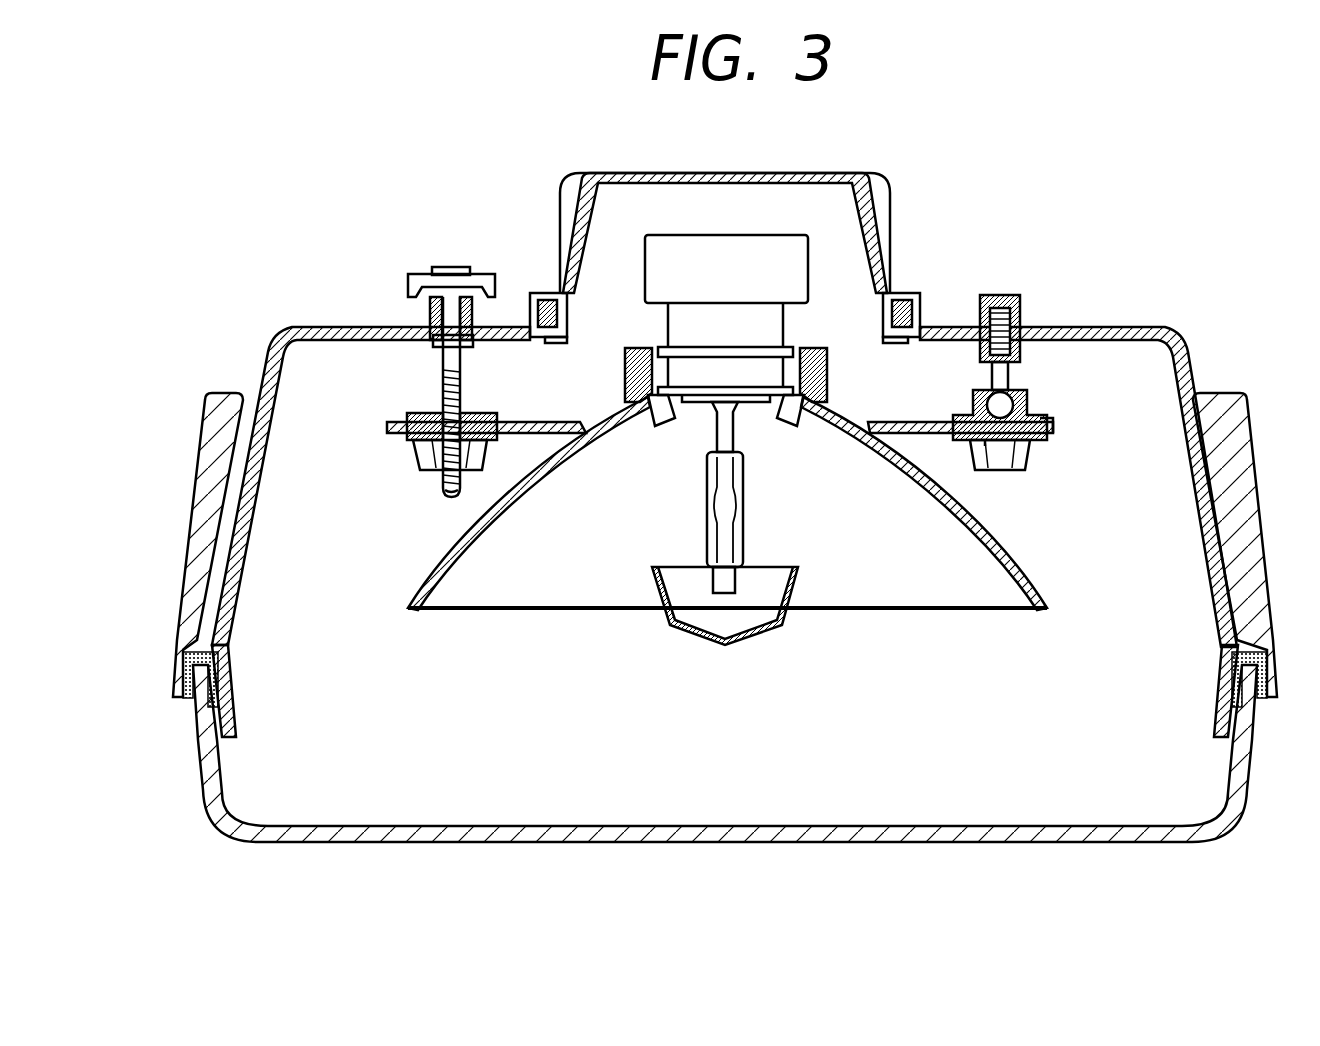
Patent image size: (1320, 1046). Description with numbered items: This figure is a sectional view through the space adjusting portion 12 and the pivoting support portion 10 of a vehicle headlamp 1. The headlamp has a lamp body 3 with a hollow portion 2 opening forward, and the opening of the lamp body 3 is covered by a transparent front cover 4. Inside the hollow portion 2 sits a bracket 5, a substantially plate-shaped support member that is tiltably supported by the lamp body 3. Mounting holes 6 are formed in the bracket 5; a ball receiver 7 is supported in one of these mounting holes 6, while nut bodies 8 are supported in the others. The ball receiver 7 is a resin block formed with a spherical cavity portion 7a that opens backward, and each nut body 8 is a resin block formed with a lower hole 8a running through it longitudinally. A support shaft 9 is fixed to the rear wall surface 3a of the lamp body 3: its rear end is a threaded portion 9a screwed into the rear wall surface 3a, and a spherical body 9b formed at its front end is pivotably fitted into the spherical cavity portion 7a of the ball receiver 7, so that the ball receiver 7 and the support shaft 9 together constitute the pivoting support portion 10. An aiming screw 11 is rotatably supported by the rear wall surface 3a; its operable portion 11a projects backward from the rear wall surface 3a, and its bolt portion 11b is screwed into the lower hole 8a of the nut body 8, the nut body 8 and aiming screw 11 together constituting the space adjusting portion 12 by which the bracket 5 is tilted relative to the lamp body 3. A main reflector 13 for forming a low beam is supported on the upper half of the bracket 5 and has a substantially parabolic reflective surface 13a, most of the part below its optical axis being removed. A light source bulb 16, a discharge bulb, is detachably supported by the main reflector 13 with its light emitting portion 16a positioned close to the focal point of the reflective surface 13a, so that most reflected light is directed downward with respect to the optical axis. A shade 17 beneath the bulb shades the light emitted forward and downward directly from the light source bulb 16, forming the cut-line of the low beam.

The vehicle headlamp 1 is at (1145, 185).
The hollow portion 2 is at (1195, 515).
The lamp body 3 is at (268, 353).
The rear wall surface 3a is at (1070, 328).
The front cover 4 is at (868, 838).
The bracket 5 is at (917, 422).
The mounting hole 6 is at (428, 458).
The ball receiver 7 is at (996, 415).
The spherical cavity portion 7a is at (1015, 410).
The nut body 8 is at (470, 453).
The lower hole 8a is at (445, 400).
The support shaft 9 is at (990, 378).
The threaded portion 9a is at (996, 305).
The spherical body 9b is at (985, 443).
The pivoting support portion 10 is at (1046, 370).
The aiming screw 11 is at (464, 360).
The operable portion 11a is at (421, 279).
The bolt portion 11b is at (452, 493).
The space adjusting portion 12 is at (372, 431).
The main reflector 13 is at (1035, 609).
The reflective surface 13a is at (450, 563).
The light source bulb 16 is at (742, 520).
The light emitting portion 16a is at (722, 506).
The shade 17 is at (700, 642).